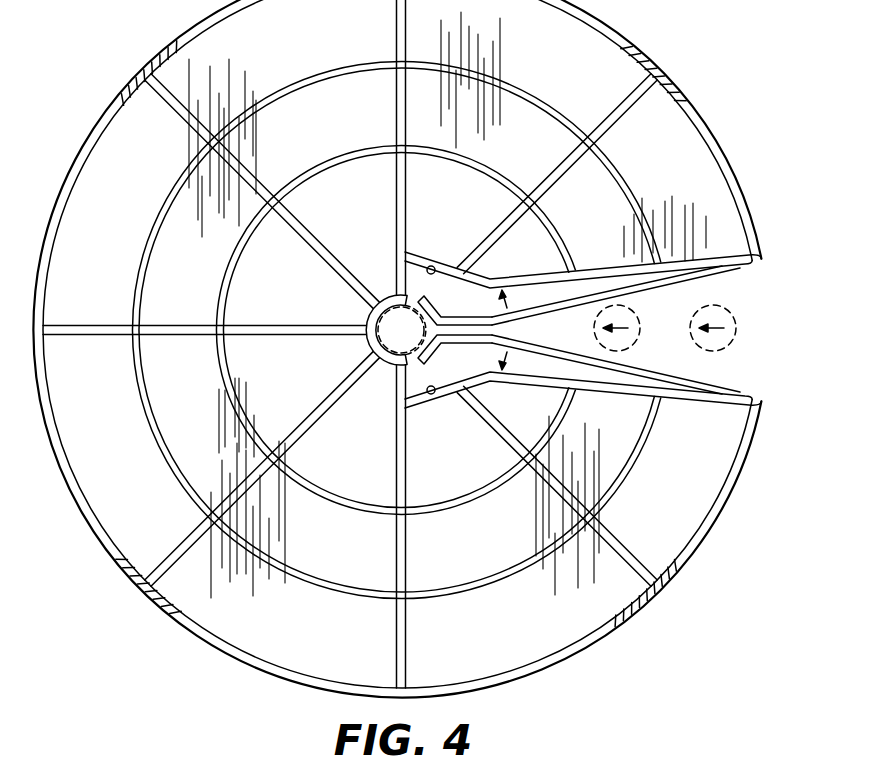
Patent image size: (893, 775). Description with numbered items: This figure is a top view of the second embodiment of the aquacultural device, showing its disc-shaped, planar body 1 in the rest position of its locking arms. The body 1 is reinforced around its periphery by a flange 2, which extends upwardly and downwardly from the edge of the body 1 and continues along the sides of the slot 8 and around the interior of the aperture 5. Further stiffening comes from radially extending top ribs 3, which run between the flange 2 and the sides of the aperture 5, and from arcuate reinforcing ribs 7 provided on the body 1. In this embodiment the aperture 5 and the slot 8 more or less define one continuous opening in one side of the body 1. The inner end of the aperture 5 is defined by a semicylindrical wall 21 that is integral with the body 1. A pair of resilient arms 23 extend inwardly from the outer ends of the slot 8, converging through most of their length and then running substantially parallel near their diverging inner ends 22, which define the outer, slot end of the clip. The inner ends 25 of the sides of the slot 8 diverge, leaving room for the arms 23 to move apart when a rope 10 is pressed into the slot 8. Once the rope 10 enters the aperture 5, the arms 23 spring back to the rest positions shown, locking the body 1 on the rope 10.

The body 1 is at (138, 637).
The flange 2 is at (214, 645).
The top ribs 3 is at (398, 178).
The aperture 5 is at (398, 362).
The arcuate reinforcing ribs 7 is at (312, 82).
The slot 8 is at (632, 380).
The rope 10 is at (737, 327).
The semicylindrical wall 21 is at (372, 348).
The inner ends of arms 22 is at (432, 300).
The resilient arms 23 is at (660, 289).
The inner ends of slot sides 25 is at (433, 266).